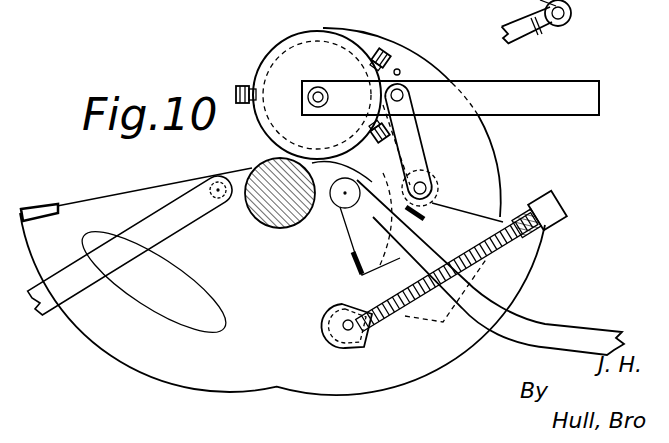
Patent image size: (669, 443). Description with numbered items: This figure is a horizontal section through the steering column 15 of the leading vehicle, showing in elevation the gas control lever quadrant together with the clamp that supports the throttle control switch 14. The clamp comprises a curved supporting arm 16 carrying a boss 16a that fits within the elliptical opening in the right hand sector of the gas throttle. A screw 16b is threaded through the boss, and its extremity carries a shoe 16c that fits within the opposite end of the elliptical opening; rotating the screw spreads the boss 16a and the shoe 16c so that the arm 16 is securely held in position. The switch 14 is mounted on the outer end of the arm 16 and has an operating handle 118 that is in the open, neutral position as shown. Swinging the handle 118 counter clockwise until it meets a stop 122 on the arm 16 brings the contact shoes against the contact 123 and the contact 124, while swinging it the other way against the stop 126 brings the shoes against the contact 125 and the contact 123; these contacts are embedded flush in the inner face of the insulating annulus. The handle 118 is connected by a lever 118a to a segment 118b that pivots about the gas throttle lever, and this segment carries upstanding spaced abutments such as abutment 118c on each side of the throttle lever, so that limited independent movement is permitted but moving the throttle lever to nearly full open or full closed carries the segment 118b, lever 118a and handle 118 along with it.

The electric switch 14 is at (300, 52).
The steering column 15 is at (282, 175).
The curved supporting arm 16 is at (437, 73).
The boss 16a is at (438, 314).
The screw 16b is at (560, 202).
The shoe 16c is at (354, 349).
The operating handle 118 is at (515, 91).
The lever 118a is at (415, 148).
The segment 118b is at (357, 237).
The abutment 118c is at (353, 264).
The stop 122 is at (396, 69).
The contact 123 is at (243, 84).
The contact 124 is at (372, 132).
The contact 125 is at (378, 50).
The stop 126 is at (392, 185).